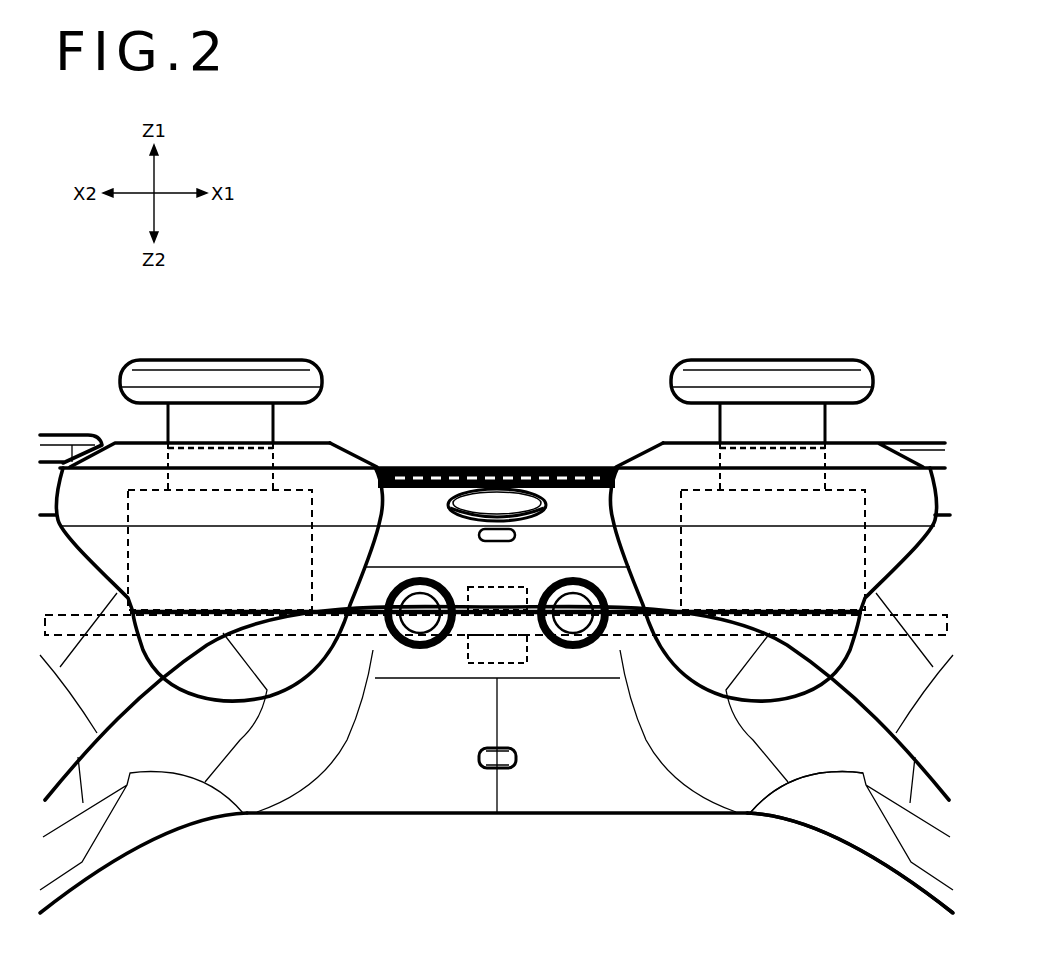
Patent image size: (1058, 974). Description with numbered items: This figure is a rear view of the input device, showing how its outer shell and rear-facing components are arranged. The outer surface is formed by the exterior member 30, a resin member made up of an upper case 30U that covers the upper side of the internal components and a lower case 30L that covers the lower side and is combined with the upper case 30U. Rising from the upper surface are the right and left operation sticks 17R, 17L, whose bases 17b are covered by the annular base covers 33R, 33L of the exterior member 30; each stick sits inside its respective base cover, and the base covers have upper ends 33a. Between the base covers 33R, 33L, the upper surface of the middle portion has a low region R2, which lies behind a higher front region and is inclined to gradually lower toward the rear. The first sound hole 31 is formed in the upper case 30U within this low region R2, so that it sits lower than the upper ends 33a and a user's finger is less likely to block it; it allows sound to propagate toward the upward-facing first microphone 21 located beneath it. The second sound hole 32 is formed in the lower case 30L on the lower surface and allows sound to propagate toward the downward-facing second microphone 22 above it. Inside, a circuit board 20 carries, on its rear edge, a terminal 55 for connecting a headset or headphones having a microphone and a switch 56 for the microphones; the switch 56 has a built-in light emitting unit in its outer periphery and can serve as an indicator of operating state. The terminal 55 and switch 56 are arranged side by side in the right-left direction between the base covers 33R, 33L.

The operation stick 17L is at (234, 375).
The operation stick 17R is at (752, 375).
The bases 17b is at (290, 487).
The upper ends 33a is at (350, 450).
The base cover 33L is at (138, 480).
The base cover 33R is at (852, 480).
The low region R2 is at (583, 495).
The first sound hole 31 is at (500, 533).
The first microphone 21 is at (478, 587).
The second microphone 22 is at (485, 665).
The terminal 55 is at (573, 625).
The switch 56 is at (420, 625).
The second sound hole 32 is at (490, 763).
The circuit board 20 is at (925, 615).
The exterior member 30 is at (850, 845).
The lower case 30L is at (798, 762).
The upper case 30U is at (887, 740).